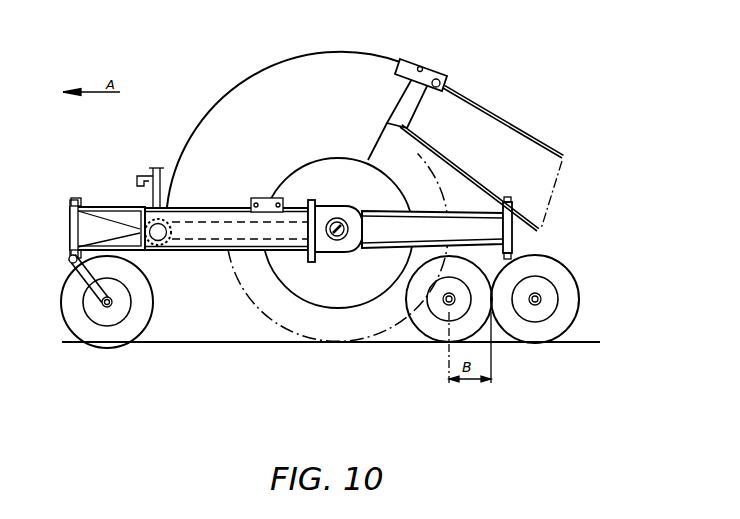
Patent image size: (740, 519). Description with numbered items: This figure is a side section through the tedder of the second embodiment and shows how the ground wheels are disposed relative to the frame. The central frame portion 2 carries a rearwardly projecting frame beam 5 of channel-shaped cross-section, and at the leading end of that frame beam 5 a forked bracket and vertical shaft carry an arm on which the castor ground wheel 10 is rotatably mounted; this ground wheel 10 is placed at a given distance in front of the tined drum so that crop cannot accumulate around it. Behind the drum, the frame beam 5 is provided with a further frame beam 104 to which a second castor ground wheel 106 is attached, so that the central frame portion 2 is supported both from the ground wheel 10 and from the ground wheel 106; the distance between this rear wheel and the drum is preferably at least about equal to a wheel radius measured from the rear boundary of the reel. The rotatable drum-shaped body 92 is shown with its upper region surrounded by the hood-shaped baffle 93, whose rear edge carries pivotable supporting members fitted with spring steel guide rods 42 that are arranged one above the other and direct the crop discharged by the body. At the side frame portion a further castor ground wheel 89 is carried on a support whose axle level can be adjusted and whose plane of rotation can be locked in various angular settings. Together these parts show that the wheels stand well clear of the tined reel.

The hood-shaped baffle 93 is at (320, 60).
The frame beam 5 is at (219, 209).
The central frame portion 2 is at (170, 241).
The ground wheel 10 is at (141, 323).
The drum-shaped body 92 is at (247, 298).
The castor ground wheel 89 is at (423, 327).
The frame beam 104 is at (469, 220).
The spring steel guide rods 42 is at (556, 185).
The ground wheel 106 is at (574, 278).